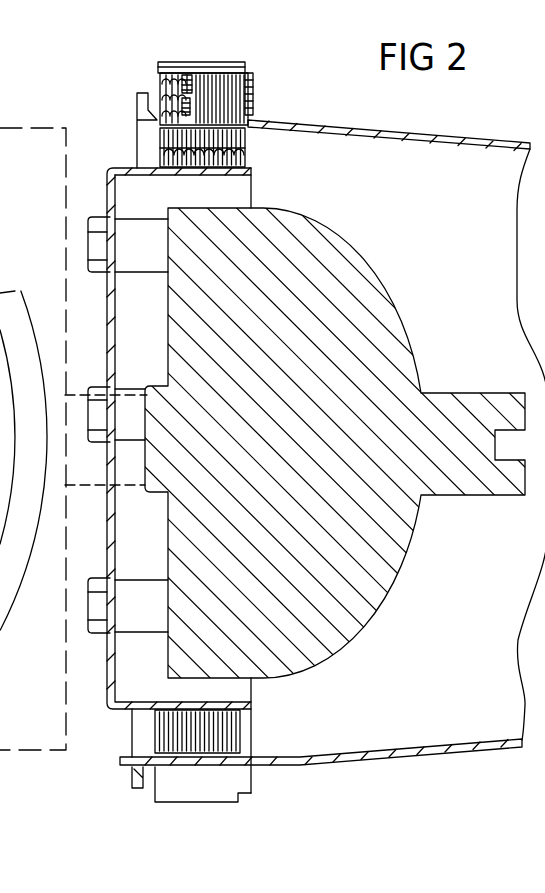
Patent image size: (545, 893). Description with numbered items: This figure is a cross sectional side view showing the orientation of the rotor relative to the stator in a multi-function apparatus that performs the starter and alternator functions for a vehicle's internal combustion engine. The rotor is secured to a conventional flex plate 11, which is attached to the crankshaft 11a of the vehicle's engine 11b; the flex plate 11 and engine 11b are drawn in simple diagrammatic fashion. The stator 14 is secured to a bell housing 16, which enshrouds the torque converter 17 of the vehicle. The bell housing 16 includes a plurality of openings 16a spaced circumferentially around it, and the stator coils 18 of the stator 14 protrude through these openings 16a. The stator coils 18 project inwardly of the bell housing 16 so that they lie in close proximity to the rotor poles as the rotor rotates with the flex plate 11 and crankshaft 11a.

The flex plate 11 is at (108, 168).
The crankshaft 11a is at (78, 486).
The engine 11b is at (48, 752).
The stator 14 is at (152, 52).
The bell housing 16 is at (432, 131).
The openings 16a is at (249, 128).
The torque converter 17 is at (368, 259).
The stator coils 18 is at (232, 106).